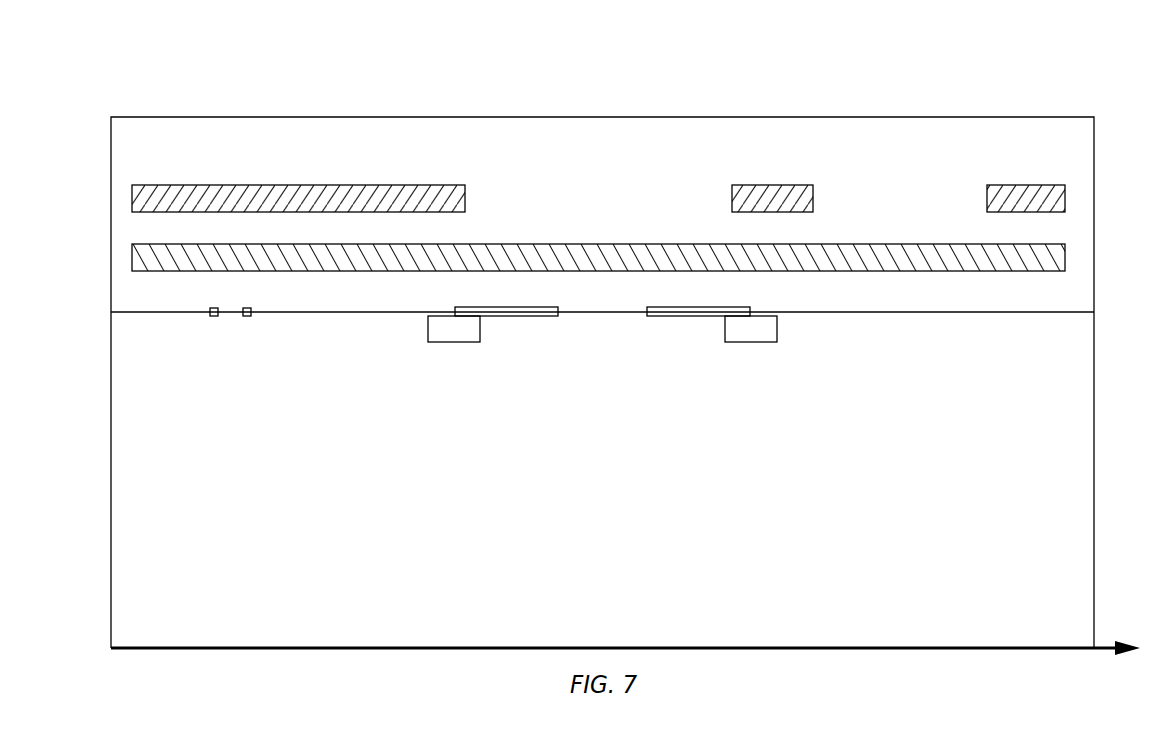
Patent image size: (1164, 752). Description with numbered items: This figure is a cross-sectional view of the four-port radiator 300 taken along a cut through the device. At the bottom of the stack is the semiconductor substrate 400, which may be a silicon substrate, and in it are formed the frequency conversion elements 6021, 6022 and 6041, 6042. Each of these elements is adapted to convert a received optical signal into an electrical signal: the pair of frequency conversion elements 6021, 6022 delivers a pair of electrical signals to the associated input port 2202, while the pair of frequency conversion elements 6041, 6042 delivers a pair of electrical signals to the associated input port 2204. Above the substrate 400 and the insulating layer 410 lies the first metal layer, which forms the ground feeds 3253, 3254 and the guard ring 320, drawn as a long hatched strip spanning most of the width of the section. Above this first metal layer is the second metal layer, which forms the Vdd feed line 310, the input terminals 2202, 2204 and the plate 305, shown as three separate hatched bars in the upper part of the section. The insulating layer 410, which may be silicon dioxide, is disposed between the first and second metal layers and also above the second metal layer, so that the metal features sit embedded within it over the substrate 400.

The four-port radiator 300 is at (1092, 61).
The Vdd feed line 310 is at (298, 186).
The input port 2202 is at (232, 185).
The input port 2204 is at (773, 185).
The plate 305 is at (1018, 185).
The ground feed 3253 is at (604, 272).
The ground feed 3254 is at (930, 271).
The guard ring 320 is at (604, 272).
The frequency conversion element 6021 is at (480, 350).
The frequency conversion element 6022 is at (455, 343).
The frequency conversion element 6041 is at (727, 350).
The frequency conversion element 6042 is at (750, 343).
The insulating layer 410 is at (1094, 230).
The semiconductor substrate 400 is at (1095, 478).